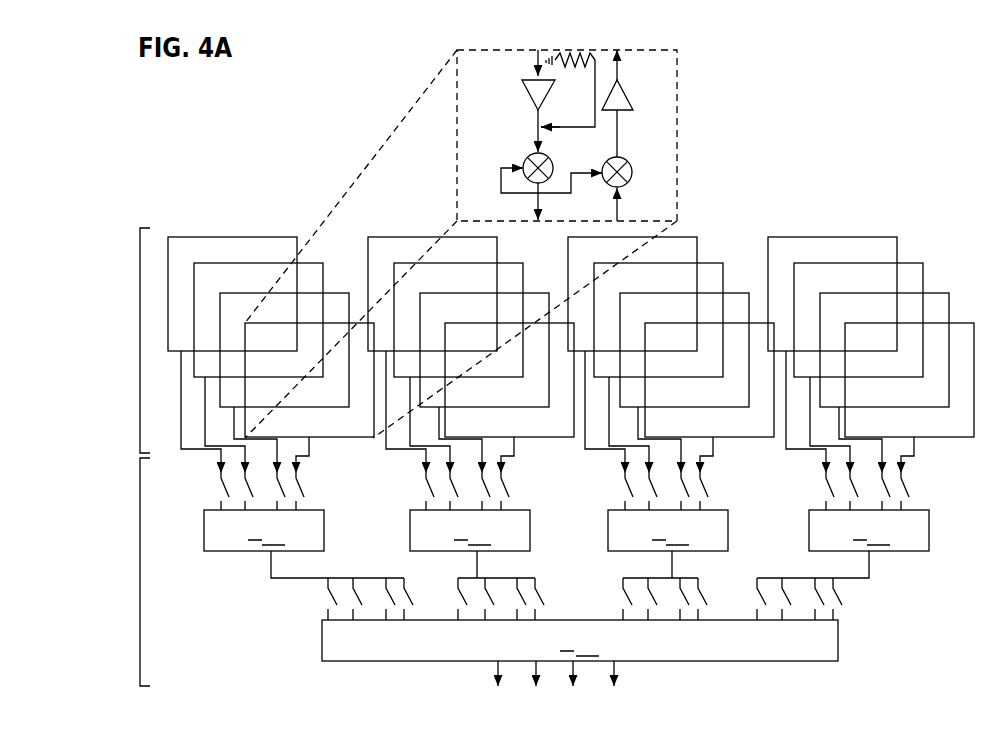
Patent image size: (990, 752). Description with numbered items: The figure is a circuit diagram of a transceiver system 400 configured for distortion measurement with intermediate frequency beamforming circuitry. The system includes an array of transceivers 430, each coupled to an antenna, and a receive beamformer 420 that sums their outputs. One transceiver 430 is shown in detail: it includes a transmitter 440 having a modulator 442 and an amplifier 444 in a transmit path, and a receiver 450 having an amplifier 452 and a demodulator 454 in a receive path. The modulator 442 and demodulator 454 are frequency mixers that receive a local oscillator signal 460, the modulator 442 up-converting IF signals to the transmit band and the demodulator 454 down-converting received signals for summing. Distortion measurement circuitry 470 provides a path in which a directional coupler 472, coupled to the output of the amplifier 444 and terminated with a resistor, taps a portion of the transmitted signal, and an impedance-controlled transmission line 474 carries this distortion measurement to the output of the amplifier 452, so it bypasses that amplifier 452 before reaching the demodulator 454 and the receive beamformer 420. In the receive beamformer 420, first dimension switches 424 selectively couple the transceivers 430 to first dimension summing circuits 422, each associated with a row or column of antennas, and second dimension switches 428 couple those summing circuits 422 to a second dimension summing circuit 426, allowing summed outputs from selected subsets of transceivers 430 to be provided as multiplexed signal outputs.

The transceiver system 400 is at (171, 161).
The transceiver 430 is at (140, 340).
The receive beamformer 420 is at (140, 573).
The first dimension switches 424 is at (212, 492).
The first dimension summing circuits 422 is at (240, 552).
The second dimension switches 428 is at (321, 604).
The second dimension summing circuit 426 is at (328, 662).
The distortion measurement circuitry 470 is at (546, 45).
The receiver 450 is at (513, 86).
The amplifier 452 is at (528, 95).
The directional coupler 472 is at (592, 82).
The impedance-controlled transmission line 474 is at (556, 130).
The demodulator 454 is at (523, 156).
The local oscillator signal 460 is at (533, 194).
The transmitter 440 is at (630, 85).
The amplifier 444 is at (628, 96).
The modulator 442 is at (633, 174).